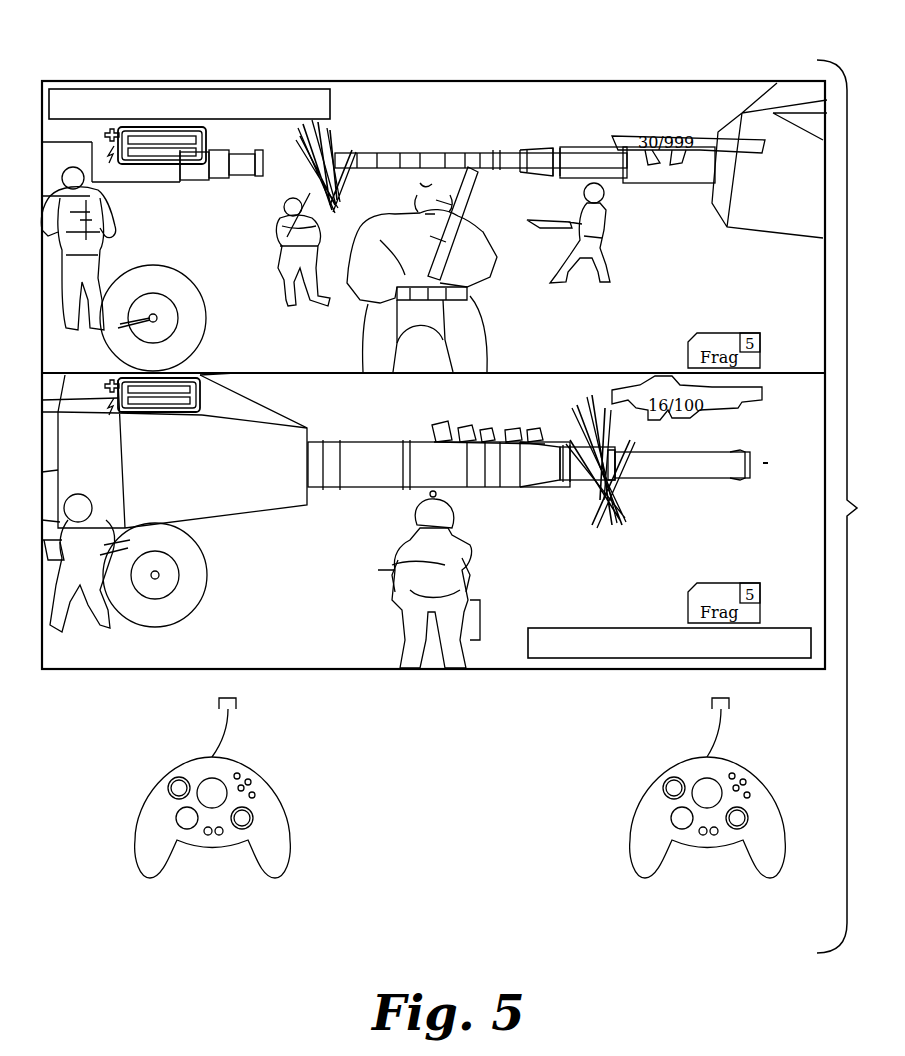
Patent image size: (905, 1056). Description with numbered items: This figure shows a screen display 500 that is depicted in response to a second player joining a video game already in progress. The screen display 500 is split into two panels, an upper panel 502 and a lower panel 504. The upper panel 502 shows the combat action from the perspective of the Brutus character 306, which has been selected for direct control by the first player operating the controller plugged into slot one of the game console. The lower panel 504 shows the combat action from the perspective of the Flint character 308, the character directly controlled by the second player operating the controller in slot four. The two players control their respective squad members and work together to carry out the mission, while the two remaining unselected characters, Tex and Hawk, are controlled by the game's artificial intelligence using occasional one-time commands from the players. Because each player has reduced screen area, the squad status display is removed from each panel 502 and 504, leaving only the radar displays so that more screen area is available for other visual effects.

The screen display 500 is at (289, 60).
The upper panel 502 is at (189, 104).
The lower panel 504 is at (669, 643).
The third character 306 is at (368, 342).
The fourth character 308 is at (610, 225).